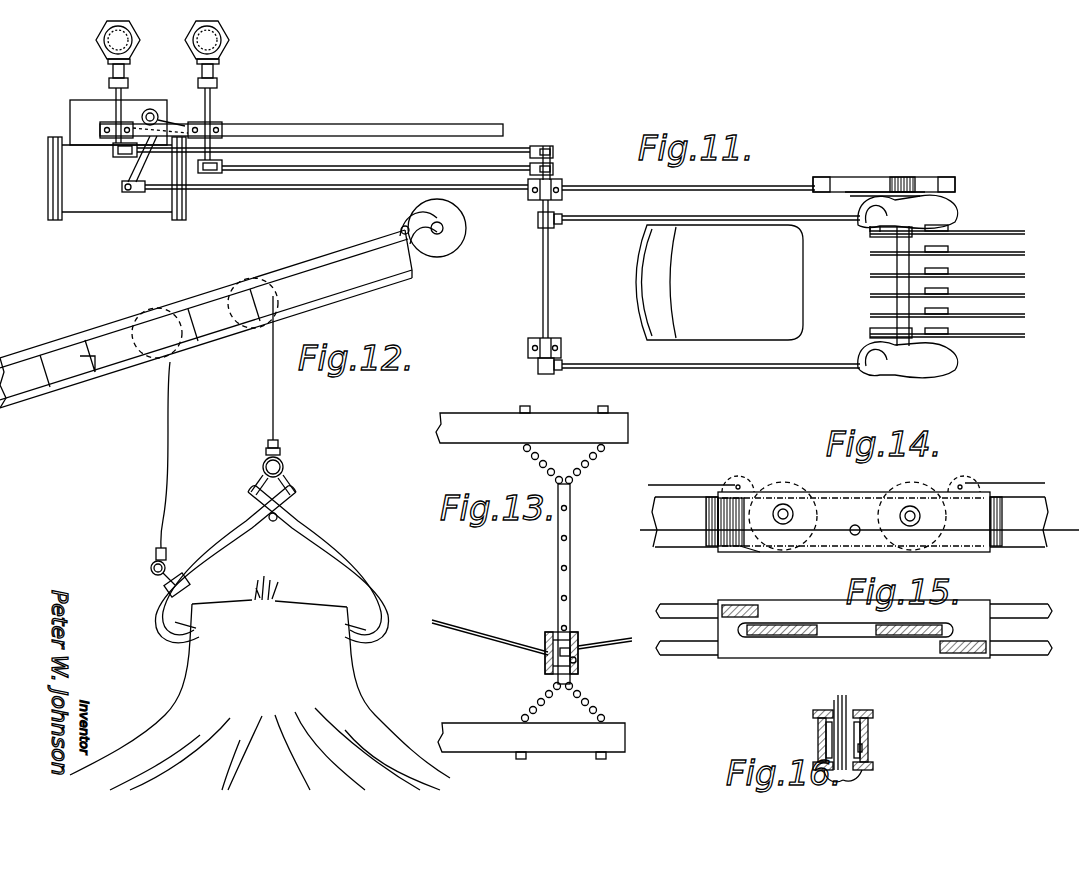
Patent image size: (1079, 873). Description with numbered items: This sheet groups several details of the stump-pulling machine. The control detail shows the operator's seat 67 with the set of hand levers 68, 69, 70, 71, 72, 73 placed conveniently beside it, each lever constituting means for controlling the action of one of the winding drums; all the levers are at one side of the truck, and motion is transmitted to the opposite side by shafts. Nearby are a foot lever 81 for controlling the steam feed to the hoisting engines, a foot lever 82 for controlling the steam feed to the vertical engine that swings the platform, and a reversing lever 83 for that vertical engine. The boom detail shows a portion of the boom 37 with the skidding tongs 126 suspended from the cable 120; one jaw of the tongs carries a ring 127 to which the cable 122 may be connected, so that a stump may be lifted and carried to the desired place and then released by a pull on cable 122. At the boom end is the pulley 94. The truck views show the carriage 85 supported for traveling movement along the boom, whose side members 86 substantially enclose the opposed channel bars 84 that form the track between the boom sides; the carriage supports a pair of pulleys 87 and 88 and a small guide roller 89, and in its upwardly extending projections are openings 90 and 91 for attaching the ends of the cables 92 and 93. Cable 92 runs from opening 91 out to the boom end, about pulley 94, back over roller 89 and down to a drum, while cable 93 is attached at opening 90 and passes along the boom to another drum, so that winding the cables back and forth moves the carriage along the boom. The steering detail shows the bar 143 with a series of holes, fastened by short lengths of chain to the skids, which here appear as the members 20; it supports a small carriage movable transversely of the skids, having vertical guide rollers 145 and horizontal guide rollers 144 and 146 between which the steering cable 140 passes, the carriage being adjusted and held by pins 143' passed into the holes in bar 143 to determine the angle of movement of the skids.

In FIG. 13, the track rail 20 is at (483, 433).
In FIG. 12, the boom 37 is at (62, 388).
In FIG. 11, the seat 67 is at (719, 282).
In FIG. 11, the hand lever 68 is at (1025, 231).
In FIG. 11, the hand lever 69 is at (1025, 252).
In FIG. 11, the hand lever 70 is at (1025, 274).
In FIG. 11, the hand lever 71 is at (1025, 294).
In FIG. 11, the hand lever 72 is at (1025, 314).
In FIG. 11, the hand lever 73 is at (1025, 334).
In FIG. 11, the foot lever 81 is at (950, 368).
In FIG. 11, the foot lever 82 is at (952, 202).
In FIG. 11, the reversing lever 83 is at (945, 177).
In FIG. 14, the channel bars 84 is at (676, 540).
In FIG. 15, the channel bars 84 is at (678, 645).
In FIG. 16, the channel bars 84 is at (815, 740).
In FIG. 14, the carriage 85 is at (828, 508).
In FIG. 15, the carriage 85 is at (975, 610).
In FIG. 14, the side members 86 is at (752, 552).
In FIG. 16, the side members 86 is at (843, 787).
In FIG. 12, the pulley 87 is at (170, 312).
In FIG. 14, the pulley 87 is at (786, 482).
In FIG. 15, the pulley 87 is at (772, 636).
In FIG. 12, the pulley 88 is at (258, 282).
In FIG. 14, the pulley 88 is at (914, 482).
In FIG. 15, the pulley 88 is at (896, 636).
In FIG. 16, the pulley 88 is at (844, 720).
In FIG. 14, the guide roller 89 is at (852, 534).
In FIG. 16, the guide roller 89 is at (866, 752).
In FIG. 14, the opening 90 is at (738, 485).
In FIG. 15, the opening 90 is at (745, 605).
In FIG. 14, the opening 91 is at (962, 485).
In FIG. 15, the opening 91 is at (962, 655).
In FIG. 14, the cable 92 is at (1040, 483).
In FIG. 14, the cable 93 is at (678, 485).
In FIG. 12, the pulley 94 is at (448, 252).
In FIG. 12, the cable 120 is at (276, 380).
In FIG. 12, the cable 122 is at (167, 447).
In FIG. 12, the skidding tongs 126 is at (308, 540).
In FIG. 12, the ring 127 is at (175, 578).
In FIG. 13, the cable 140 is at (478, 618).
In FIG. 13, the bar 143 is at (535, 584).
In FIG. 13, the pin 143' is at (595, 612).
In FIG. 13, the horizontal guide roller 144 is at (578, 653).
In FIG. 13, the vertical guide rollers 145 is at (578, 662).
In FIG. 13, the horizontal guide roller 146 is at (545, 666).